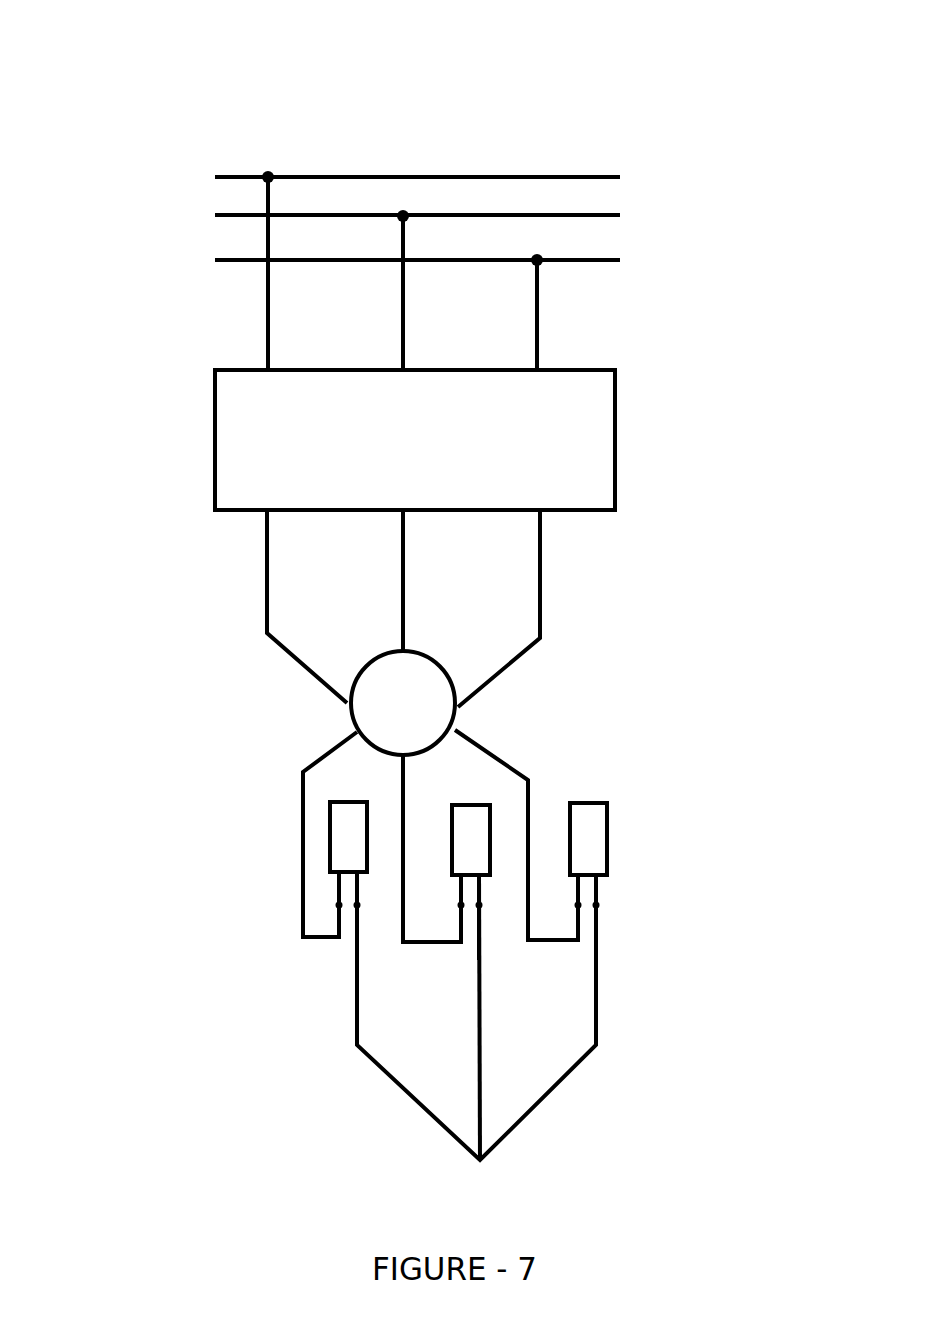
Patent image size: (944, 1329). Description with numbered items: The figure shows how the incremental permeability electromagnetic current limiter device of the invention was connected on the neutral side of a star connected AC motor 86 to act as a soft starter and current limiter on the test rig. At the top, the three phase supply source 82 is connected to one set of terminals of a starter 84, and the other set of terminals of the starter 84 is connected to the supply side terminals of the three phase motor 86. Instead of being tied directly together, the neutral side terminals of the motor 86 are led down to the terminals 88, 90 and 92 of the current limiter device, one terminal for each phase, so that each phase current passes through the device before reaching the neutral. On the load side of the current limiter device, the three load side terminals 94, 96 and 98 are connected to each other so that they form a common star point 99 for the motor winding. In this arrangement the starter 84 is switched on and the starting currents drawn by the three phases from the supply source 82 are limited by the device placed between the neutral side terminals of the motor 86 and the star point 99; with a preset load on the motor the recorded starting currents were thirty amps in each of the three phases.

The three phase supply source 82 is at (605, 258).
The starter 84 is at (615, 439).
The three-phase AC motor 86 is at (437, 652).
The terminal of the incremental permeability electromagnetic current limiter device 88 is at (340, 873).
The terminal of the incremental permeability electromagnetic current limiter device 90 is at (462, 907).
The terminal of the incremental permeability electromagnetic current limiter device 92 is at (578, 908).
The load side terminal of the current limiter device 94 is at (340, 903).
The load side terminal of the current limiter device 96 is at (480, 903).
The load side terminal of the current limiter device 98 is at (600, 903).
The star point 99 is at (480, 1165).